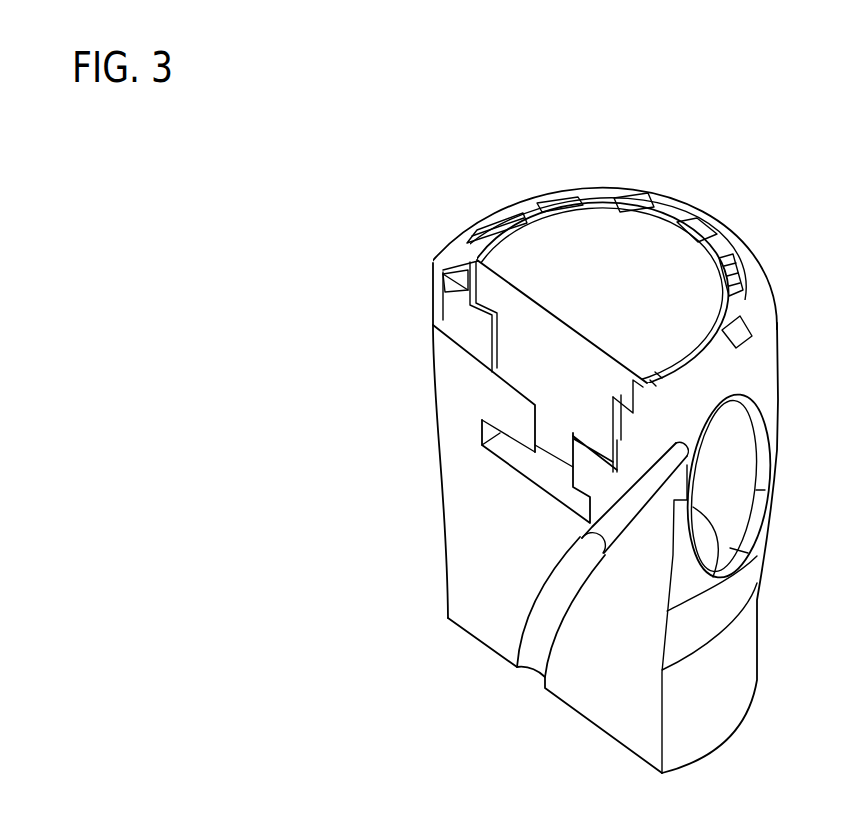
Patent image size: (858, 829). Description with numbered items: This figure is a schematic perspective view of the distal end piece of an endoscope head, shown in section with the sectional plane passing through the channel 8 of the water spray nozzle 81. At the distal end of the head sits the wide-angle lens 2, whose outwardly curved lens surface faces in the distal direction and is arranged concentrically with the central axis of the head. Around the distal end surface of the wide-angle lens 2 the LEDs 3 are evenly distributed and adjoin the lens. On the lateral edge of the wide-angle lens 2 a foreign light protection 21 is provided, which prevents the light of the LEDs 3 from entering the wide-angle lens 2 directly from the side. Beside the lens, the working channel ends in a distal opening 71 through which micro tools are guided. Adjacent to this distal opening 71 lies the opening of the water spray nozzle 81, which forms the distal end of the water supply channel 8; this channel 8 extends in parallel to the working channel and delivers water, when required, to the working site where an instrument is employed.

The wide-angle lens 2 is at (665, 287).
The LEDs 3 is at (697, 230).
The foreign light protection 21 is at (660, 377).
The water spray nozzle 81 is at (680, 455).
The distal opening 71 is at (737, 500).
The water supply channel 8 is at (555, 602).